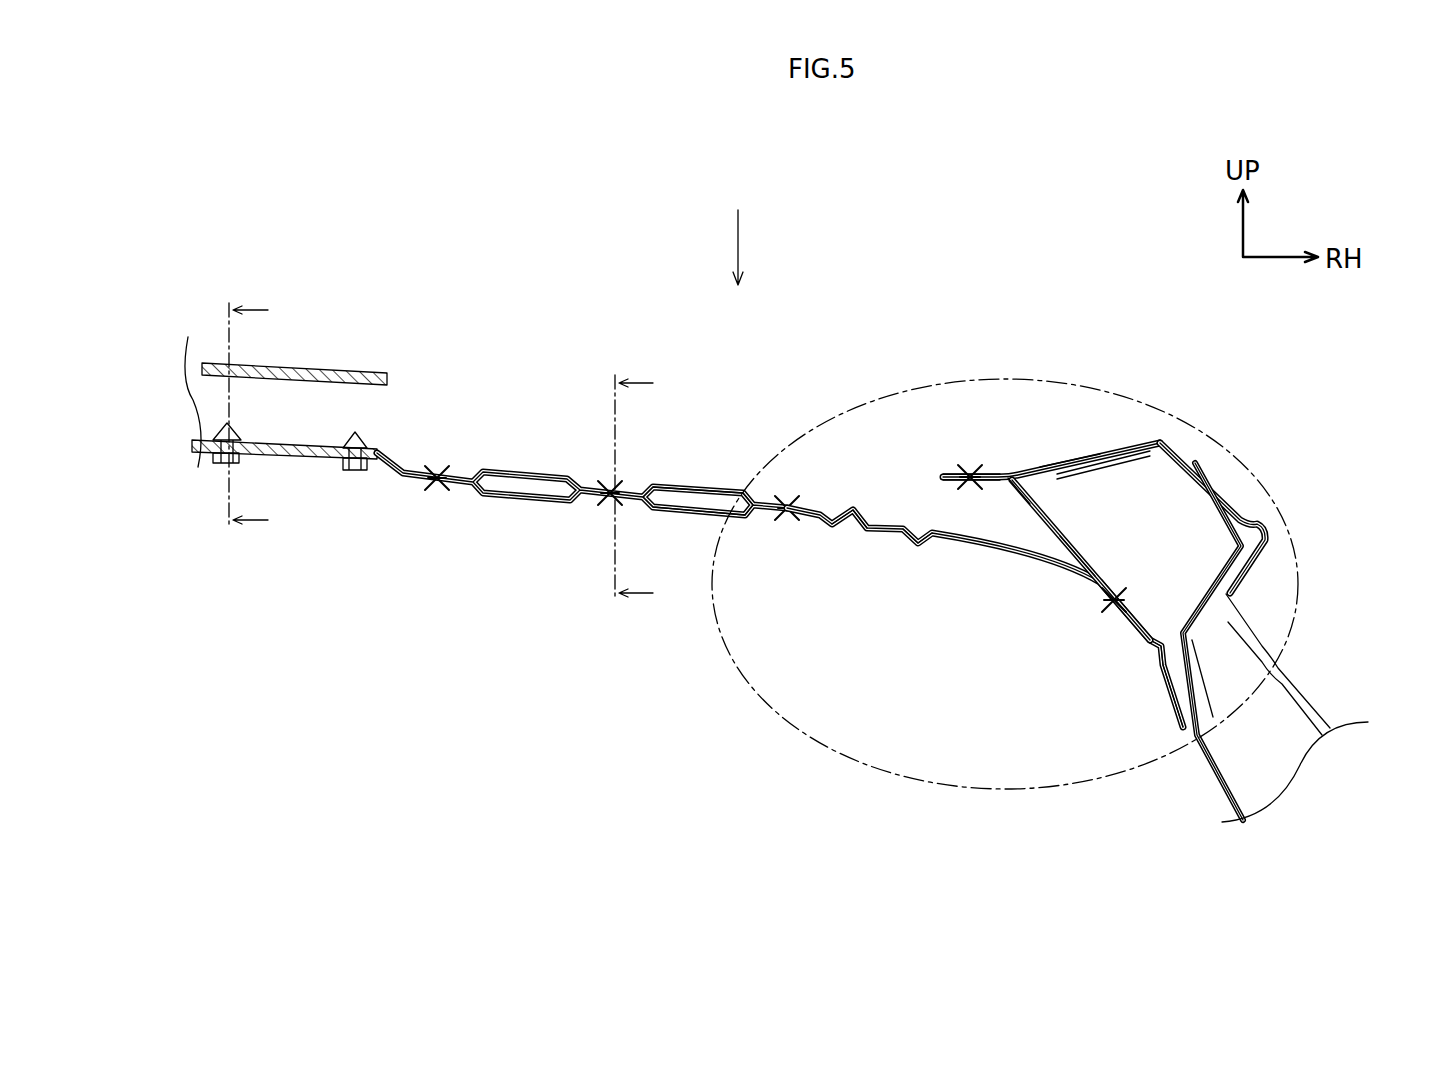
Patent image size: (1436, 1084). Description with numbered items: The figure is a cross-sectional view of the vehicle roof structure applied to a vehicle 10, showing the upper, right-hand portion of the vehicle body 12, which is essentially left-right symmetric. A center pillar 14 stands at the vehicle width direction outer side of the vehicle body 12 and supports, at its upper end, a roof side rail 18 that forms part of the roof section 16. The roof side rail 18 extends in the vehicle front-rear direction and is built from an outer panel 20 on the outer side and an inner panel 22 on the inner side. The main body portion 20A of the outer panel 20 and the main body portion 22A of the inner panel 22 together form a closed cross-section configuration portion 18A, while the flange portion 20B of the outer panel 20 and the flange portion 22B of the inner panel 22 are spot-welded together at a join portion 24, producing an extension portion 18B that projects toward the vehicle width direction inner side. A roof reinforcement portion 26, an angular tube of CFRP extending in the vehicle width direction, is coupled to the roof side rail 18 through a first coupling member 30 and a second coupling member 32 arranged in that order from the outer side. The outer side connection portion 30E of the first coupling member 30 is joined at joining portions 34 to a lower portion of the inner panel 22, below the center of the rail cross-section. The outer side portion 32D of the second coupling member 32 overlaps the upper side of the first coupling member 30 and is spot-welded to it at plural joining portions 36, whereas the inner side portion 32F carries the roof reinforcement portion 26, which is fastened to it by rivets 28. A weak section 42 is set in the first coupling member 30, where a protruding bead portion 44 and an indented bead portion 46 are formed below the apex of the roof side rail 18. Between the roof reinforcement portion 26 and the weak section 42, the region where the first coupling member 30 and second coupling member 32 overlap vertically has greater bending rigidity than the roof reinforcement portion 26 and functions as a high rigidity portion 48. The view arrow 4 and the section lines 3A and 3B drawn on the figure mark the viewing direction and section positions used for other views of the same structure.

The section arrow 4 is at (740, 243).
The vehicle 10 is at (1133, 237).
The vehicle body 12 is at (1003, 312).
The center pillar 14 is at (1317, 693).
The roof section 16 is at (1038, 269).
The roof side rail 18 is at (1135, 429).
The closed cross-section configuration portion 18A is at (1067, 457).
The extension portion 18B is at (950, 482).
The outer panel 20 is at (1186, 444).
The main body portion 20A is at (1225, 490).
The flange portion 20B is at (1040, 476).
The inner panel 22 is at (1070, 561).
The main body portion 22A is at (1083, 557).
The flange portion 22B is at (1003, 485).
The join portion 24 is at (975, 470).
The roof reinforcement portion 26 is at (315, 367).
The rivets 28 is at (228, 465).
The first coupling member 30 is at (915, 576).
The outer side connection portion 30E is at (1150, 642).
The second coupling member 32 is at (515, 472).
The outer side portion 32D is at (697, 490).
The inner side portion 32F is at (325, 460).
The joining portions 34 is at (1117, 592).
The joining portions 36 is at (437, 487).
The weak section 42 is at (934, 394).
The bead portion 44 is at (853, 508).
The bead portion 46 is at (928, 543).
The high rigidity portion 48 is at (611, 321).
The section line 3A is at (655, 489).
The section line 3B is at (270, 418).